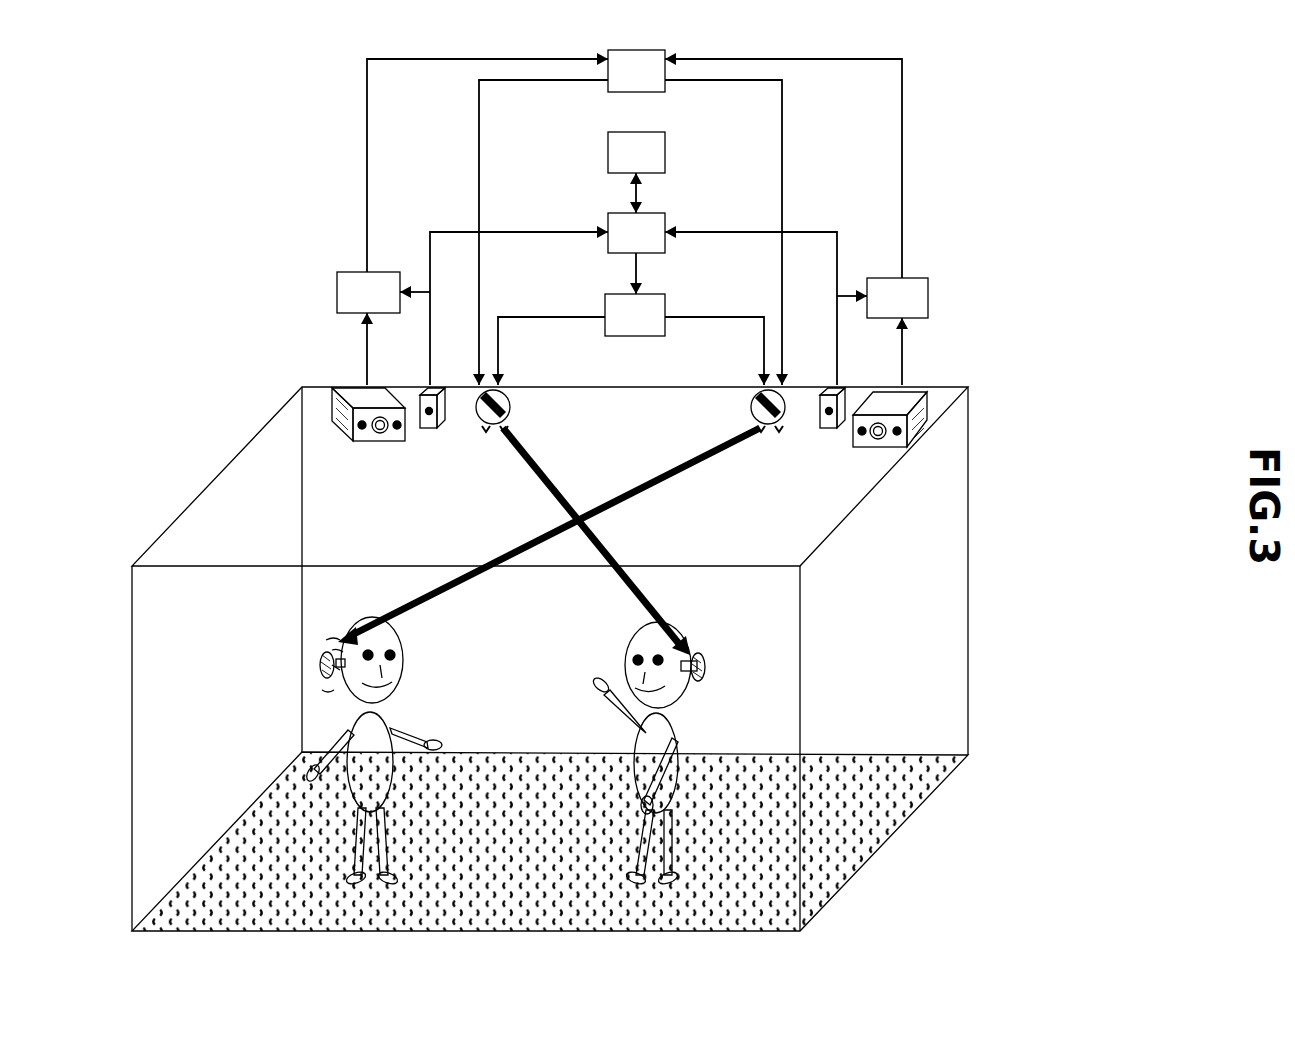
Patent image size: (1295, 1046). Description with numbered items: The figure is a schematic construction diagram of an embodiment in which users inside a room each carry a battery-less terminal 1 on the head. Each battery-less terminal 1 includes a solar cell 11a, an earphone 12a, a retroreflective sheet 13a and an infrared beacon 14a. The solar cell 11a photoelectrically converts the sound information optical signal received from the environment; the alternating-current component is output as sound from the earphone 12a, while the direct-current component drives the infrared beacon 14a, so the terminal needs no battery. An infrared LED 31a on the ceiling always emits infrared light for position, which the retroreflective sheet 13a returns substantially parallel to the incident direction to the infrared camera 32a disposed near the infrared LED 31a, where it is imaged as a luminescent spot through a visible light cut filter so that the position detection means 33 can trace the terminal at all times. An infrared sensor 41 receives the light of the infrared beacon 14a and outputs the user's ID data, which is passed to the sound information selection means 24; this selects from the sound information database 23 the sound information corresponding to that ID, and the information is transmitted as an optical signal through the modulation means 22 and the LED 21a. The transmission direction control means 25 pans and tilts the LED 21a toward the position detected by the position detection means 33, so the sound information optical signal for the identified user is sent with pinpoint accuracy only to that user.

The battery-less terminal 1 is at (252, 618).
The solar cell 11a is at (334, 668).
The earphone 12a is at (328, 692).
The retroreflective sheet 13a is at (336, 651).
The infrared beacon 14a is at (338, 634).
The LED 21a is at (506, 394).
The modulation means 22 is at (635, 315).
The sound information database 23 is at (636, 152).
The sound information selection means 24 is at (636, 233).
The transmission direction control means 25 is at (636, 71).
The infrared LED 31a is at (337, 412).
The infrared camera 32a is at (350, 388).
The position detection means 33 is at (632, 295).
The infrared sensor 41 is at (432, 390).